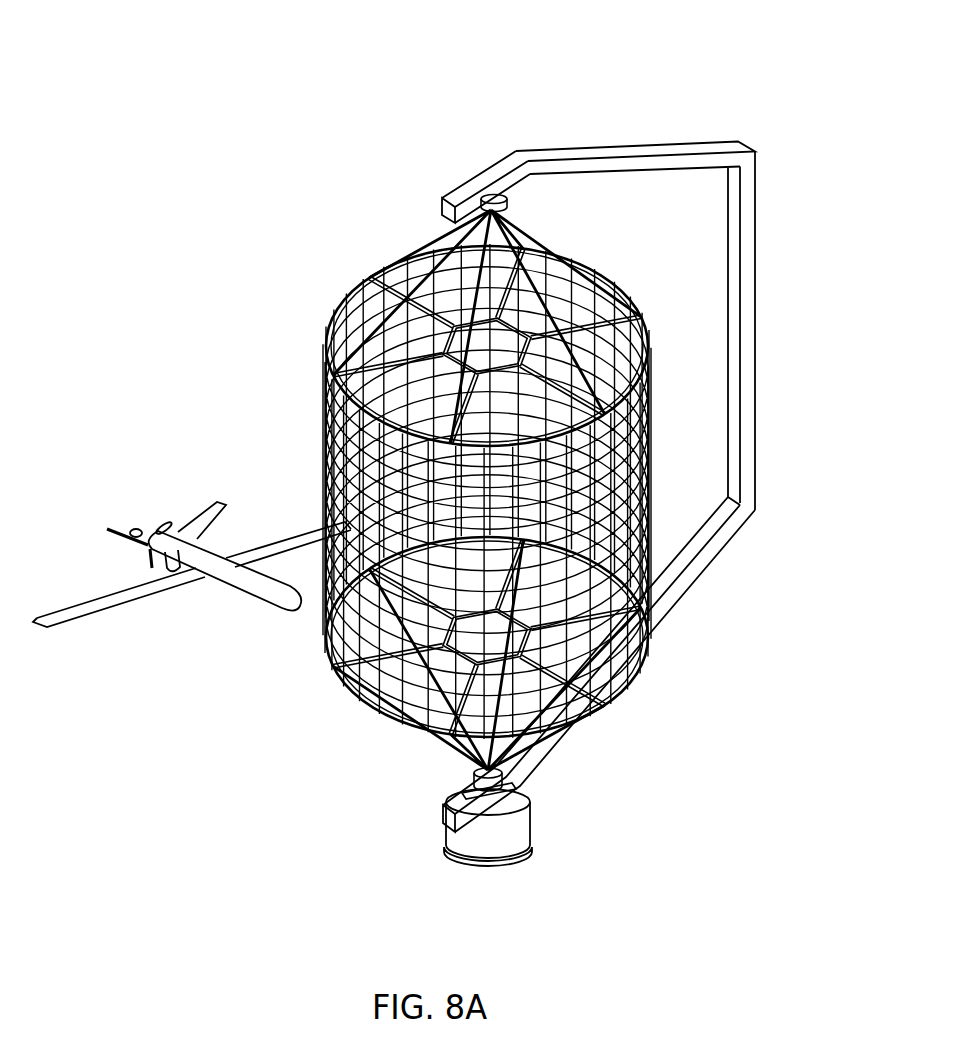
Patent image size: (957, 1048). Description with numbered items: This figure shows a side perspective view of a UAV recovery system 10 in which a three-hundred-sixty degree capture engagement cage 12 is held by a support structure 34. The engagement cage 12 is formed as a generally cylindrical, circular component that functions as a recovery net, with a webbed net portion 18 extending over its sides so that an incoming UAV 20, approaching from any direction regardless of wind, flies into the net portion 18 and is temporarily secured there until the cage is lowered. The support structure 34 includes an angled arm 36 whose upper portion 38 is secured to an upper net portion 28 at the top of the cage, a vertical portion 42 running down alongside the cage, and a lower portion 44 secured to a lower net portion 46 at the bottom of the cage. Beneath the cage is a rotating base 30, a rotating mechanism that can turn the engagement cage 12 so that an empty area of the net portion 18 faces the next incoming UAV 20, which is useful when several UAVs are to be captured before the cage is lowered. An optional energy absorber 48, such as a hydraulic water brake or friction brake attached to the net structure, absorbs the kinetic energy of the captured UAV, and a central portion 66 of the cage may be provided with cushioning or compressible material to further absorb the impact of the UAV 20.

The UAV recovery system 10 is at (300, 108).
The 360 degree capture engagement cage 12 is at (302, 402).
The net portion 18 is at (345, 470).
The UAV 20 is at (243, 587).
The upper net portion 28 is at (542, 237).
The rotating base 30 is at (532, 846).
The support structure 34 is at (800, 211).
The angled arm 36 is at (584, 152).
The upper portion 38 is at (472, 190).
The vertical portion 42 is at (765, 375).
The lower portion 44 is at (592, 756).
The lower net portion 46 is at (470, 768).
The energy absorber 48 is at (445, 812).
The central portion 66 is at (527, 305).